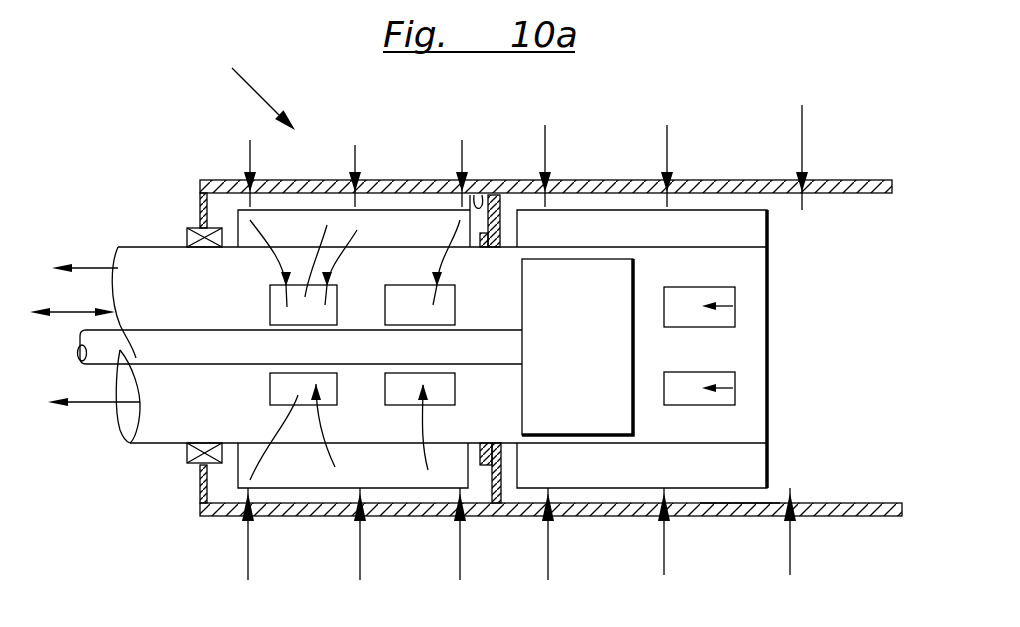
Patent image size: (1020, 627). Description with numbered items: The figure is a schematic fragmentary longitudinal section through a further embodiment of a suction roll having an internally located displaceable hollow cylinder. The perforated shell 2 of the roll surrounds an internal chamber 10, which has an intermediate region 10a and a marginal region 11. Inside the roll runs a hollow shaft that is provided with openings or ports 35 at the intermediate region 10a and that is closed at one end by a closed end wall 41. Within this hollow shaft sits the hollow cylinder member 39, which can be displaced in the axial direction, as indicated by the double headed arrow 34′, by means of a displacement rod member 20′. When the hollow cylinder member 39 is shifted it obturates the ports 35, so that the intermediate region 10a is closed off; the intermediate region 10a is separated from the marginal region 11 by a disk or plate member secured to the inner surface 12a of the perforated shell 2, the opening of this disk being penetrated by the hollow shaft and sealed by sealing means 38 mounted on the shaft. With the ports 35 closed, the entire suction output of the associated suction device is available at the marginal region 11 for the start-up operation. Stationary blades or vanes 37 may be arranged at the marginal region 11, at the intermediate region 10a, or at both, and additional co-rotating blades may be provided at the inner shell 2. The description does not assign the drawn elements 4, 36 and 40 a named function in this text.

The perforated shell 2 is at (388, 182).
The bearing 4 is at (190, 465).
The internal chamber 10 is at (848, 457).
The intermediate region 10a is at (735, 495).
The marginal region 11 is at (308, 200).
The inner surface 12a is at (474, 195).
The displacement rod member 20′ is at (118, 345).
The double headed arrow 34′ is at (85, 335).
The openings 35 is at (170, 527).
The permanent magnets 36 is at (768, 231).
The stationary blades 37 is at (350, 468).
The sealing means 38 is at (483, 455).
The hollow cylinder member 39 is at (608, 288).
The armature 40 is at (633, 362).
The closed end wall 41 is at (768, 335).